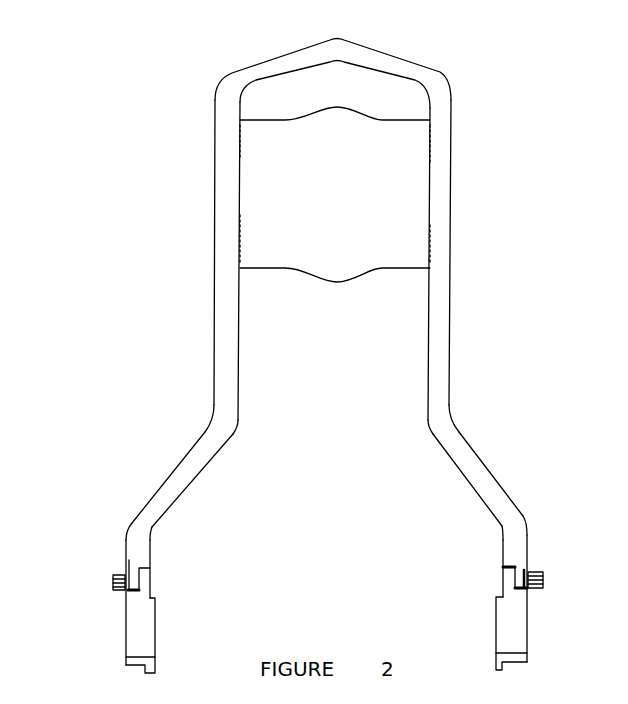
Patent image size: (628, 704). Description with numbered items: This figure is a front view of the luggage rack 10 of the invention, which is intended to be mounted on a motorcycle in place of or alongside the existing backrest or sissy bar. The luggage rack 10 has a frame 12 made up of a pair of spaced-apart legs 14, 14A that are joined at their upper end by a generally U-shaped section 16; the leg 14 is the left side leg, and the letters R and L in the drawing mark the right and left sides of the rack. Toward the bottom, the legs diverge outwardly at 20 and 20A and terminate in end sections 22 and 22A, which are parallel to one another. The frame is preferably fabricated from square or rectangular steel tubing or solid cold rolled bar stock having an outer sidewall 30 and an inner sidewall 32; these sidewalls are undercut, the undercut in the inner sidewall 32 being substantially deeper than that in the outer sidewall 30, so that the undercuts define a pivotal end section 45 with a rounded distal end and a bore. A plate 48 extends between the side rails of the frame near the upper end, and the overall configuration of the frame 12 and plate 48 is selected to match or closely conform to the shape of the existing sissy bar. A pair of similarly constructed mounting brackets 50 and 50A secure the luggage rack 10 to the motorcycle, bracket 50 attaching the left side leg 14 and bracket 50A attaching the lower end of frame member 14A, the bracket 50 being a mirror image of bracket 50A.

The luggage rack 10 is at (480, 186).
The U-shaped section 16 is at (368, 48).
The right upright R is at (212, 345).
The left upright L is at (448, 363).
The outer sidewall 30 is at (451, 300).
The inner sidewall 32 is at (427, 313).
The frame 12 is at (451, 420).
The diverging lower end portion 20 is at (480, 475).
The leg 14 is at (515, 520).
The diverging lower end portion 20A is at (172, 475).
The leg 14A is at (130, 548).
The end section 22 is at (528, 558).
The end section 22A is at (130, 560).
The pivotal end section 45 is at (510, 575).
The mounting bracket 50 is at (512, 630).
The mounting bracket 50A is at (145, 633).
The plate 48 is at (348, 192).